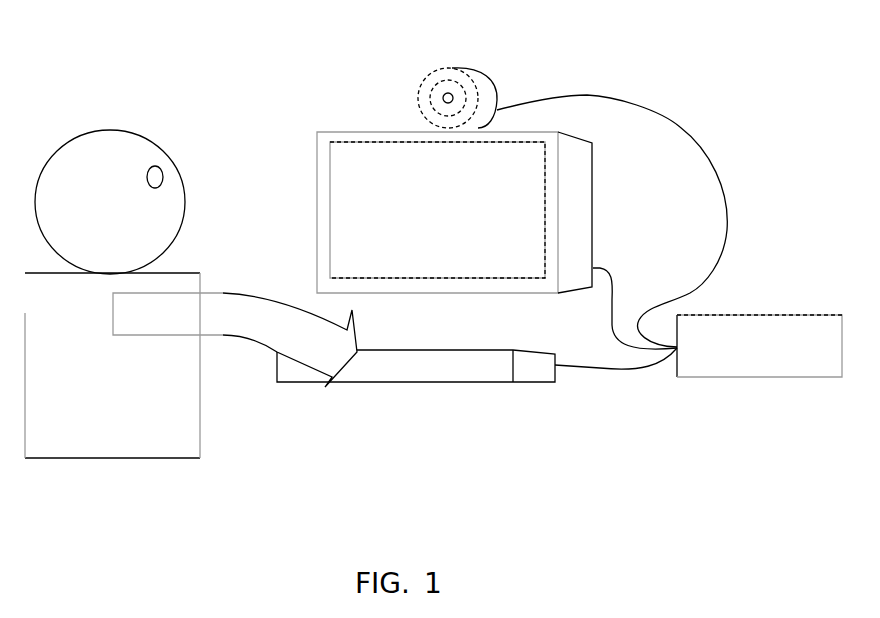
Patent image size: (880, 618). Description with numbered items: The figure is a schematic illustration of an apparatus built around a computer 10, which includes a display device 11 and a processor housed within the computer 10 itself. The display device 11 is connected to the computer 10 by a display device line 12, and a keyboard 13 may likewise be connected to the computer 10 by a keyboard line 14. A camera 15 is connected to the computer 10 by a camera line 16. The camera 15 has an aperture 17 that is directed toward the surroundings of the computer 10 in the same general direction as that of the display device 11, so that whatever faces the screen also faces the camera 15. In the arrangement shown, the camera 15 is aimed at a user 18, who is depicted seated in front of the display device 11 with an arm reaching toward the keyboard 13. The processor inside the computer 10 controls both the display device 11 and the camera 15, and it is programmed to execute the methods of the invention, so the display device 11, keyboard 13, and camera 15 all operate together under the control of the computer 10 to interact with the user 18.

The computer 10 is at (778, 362).
The display device 11 is at (454, 224).
The display device line 12 is at (608, 260).
The keyboard 13 is at (485, 392).
The keyboard line 14 is at (609, 378).
The camera 15 is at (432, 56).
The camera line 16 is at (636, 95).
The aperture 17 is at (451, 88).
The user 18 is at (165, 133).